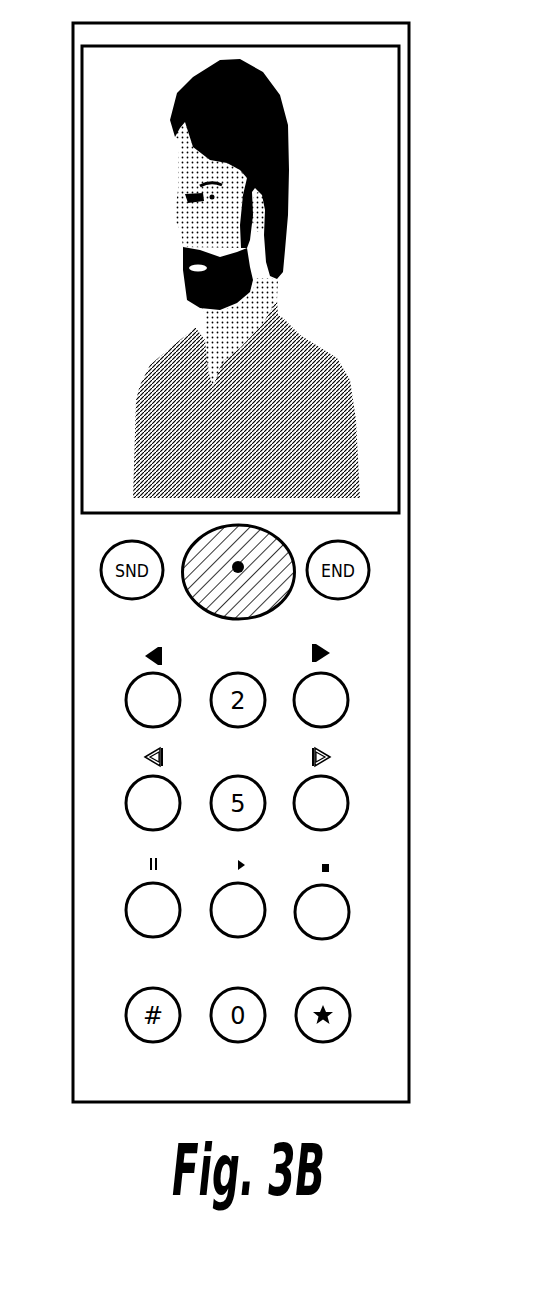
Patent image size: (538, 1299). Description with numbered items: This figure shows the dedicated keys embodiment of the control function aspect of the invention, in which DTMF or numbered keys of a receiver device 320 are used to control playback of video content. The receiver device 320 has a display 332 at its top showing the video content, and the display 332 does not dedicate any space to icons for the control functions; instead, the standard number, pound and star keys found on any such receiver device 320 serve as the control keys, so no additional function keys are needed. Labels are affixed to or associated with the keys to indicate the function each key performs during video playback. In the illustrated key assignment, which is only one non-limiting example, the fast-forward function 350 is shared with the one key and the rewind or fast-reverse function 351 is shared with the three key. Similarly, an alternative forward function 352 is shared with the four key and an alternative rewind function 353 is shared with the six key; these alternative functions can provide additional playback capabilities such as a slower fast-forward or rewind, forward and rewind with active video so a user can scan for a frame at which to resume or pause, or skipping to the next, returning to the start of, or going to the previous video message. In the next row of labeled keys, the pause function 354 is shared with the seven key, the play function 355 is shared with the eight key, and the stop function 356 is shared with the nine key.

The receiver device 320 is at (260, 562).
The display 332 is at (278, 279).
The fast-forward function 350 is at (98, 672).
The rewind or fast-reverse function 351 is at (375, 674).
The alternative forward function 352 is at (98, 777).
The alternative rewind function 353 is at (375, 777).
The pause function 354 is at (98, 883).
The play function 355 is at (333, 858).
The stop function 356 is at (377, 888).